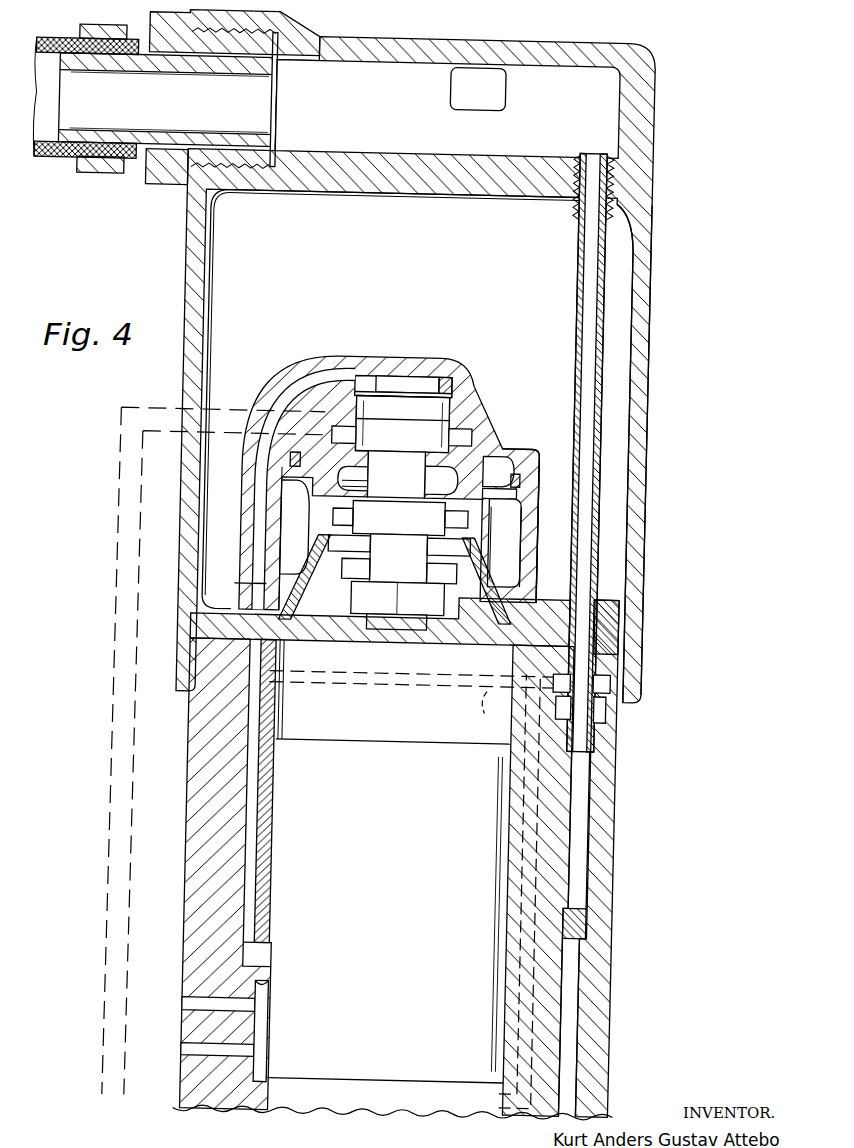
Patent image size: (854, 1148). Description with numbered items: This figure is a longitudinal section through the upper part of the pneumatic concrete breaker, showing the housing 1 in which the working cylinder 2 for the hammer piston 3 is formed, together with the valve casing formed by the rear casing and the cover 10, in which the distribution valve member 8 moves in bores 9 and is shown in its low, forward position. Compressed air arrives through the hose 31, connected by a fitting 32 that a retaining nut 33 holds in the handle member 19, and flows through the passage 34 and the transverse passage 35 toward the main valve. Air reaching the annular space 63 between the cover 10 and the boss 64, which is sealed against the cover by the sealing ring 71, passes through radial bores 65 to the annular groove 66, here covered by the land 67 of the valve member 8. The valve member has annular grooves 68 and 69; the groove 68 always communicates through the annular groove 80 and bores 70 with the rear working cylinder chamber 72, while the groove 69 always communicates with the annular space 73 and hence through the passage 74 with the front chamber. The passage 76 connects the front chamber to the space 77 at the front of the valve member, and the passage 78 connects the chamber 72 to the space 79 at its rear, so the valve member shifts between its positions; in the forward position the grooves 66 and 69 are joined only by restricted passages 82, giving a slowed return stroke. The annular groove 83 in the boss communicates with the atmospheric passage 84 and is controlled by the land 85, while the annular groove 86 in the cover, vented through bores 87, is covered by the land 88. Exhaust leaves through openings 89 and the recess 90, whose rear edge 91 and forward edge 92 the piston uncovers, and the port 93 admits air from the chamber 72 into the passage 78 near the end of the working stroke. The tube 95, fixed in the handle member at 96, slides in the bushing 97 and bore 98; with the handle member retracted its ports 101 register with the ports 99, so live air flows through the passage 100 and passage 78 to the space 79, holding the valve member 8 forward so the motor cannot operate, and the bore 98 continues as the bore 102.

The housing 1 is at (616, 802).
The working cylinder 2 is at (284, 724).
The hammer piston 3 is at (321, 742).
The distribution valve member 8 is at (410, 412).
The bores 9 is at (362, 397).
The cover 10 is at (443, 376).
The handle member 19 is at (642, 412).
The hose 31 is at (68, 166).
The fitting 32 is at (155, 148).
The retaining nut 33 is at (168, 178).
The passage 34 is at (345, 154).
The transverse passage 35 is at (496, 91).
The annular space 63 is at (508, 547).
The boss 64 is at (528, 562).
The radial bores 65 is at (492, 512).
The annular groove 66 is at (519, 477).
The land 67 is at (386, 530).
The annular groove 68 is at (406, 610).
The annular groove 69 is at (437, 480).
The bores 70 is at (301, 633).
The sealing ring 71 is at (515, 470).
The rear working cylinder chamber 72 is at (408, 727).
The annular space 73 is at (512, 452).
The passage 74 is at (222, 414).
The passage 76 is at (598, 864).
The space 77 is at (398, 632).
The passage 78 is at (316, 388).
The space 79 is at (408, 377).
The annular groove 80 is at (333, 549).
The restricted passages 82 is at (322, 486).
The annular groove 83 is at (350, 572).
The passage 84 is at (235, 587).
The land 85 is at (362, 611).
The annular groove 86 is at (470, 428).
The bores 87 is at (458, 470).
The land 88 is at (383, 448).
The exhaust openings 89 is at (192, 1053).
The recess 90 is at (274, 1030).
The rear edge 91 is at (278, 990).
The forward edge 92 is at (272, 1083).
The port 93 is at (271, 956).
The tube 95 is at (600, 365).
The fixing point 96 is at (606, 182).
The bushing 97 is at (604, 660).
The bore 98 is at (592, 764).
The ports 99 is at (613, 680).
The passage 100 is at (415, 706).
The ports 101 is at (605, 710).
The bore 102 is at (585, 943).